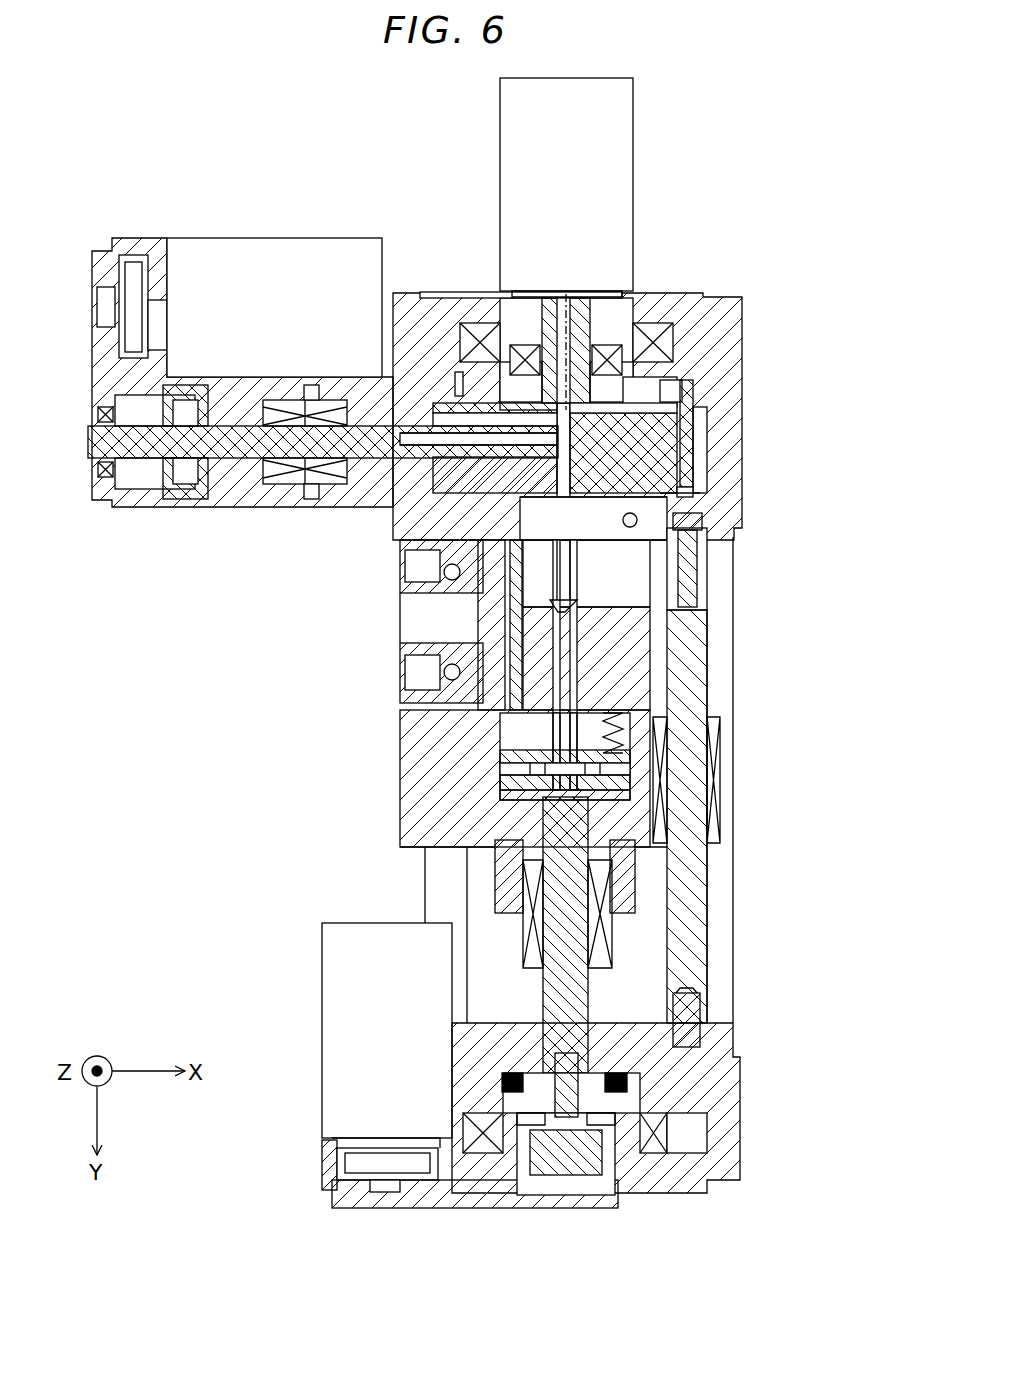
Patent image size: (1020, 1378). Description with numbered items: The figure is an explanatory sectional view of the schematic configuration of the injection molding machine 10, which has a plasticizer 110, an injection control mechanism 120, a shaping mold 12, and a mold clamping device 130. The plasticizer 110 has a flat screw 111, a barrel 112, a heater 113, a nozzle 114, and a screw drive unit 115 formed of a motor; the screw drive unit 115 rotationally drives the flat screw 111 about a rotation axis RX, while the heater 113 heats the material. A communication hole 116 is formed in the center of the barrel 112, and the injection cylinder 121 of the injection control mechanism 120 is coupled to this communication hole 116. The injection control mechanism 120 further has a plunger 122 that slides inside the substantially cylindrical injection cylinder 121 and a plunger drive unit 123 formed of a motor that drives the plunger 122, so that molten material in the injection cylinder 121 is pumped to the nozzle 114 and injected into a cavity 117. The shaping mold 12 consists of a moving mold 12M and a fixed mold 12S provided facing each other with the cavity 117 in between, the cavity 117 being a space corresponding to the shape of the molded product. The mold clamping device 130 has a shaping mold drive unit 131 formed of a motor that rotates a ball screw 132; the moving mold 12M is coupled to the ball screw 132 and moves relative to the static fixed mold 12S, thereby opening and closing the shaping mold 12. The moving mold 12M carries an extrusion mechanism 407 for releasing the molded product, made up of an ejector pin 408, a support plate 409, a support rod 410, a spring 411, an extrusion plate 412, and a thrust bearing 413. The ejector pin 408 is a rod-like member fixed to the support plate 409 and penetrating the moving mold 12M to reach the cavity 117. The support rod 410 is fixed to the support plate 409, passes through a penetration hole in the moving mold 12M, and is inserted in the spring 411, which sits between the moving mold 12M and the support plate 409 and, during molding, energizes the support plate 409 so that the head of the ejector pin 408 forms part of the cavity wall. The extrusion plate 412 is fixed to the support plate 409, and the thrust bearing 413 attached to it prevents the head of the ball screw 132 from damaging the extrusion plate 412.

The injection molding machine 10 is at (183, 148).
The plasticizer 110 is at (438, 203).
The flat screw 111 is at (655, 370).
The barrel 112 is at (672, 457).
The heater 113 is at (690, 430).
The nozzle 114 is at (690, 585).
The screw drive unit 115 is at (500, 133).
The communication hole 116 is at (695, 475).
The cavity 117 is at (620, 628).
The shaping mold 12 is at (303, 624).
The fixed mold 12S is at (485, 575).
The moving mold 12M is at (485, 628).
The injection control mechanism 120 is at (148, 530).
The injection cylinder 121 is at (520, 448).
The plunger 122 is at (243, 452).
The plunger drive unit 123 is at (270, 252).
The mold clamping device 130 is at (365, 912).
The shaping mold drive unit 131 is at (322, 1027).
The ball screw 132 is at (580, 970).
The extrusion mechanism 407 is at (373, 758).
The ejector pin 408 is at (520, 740).
The support plate 409 is at (650, 770).
The support rod 410 is at (632, 680).
The spring 411 is at (650, 735).
The extrusion plate 412 is at (620, 790).
The thrust bearing 413 is at (620, 805).
The rotation axis RX is at (566, 262).